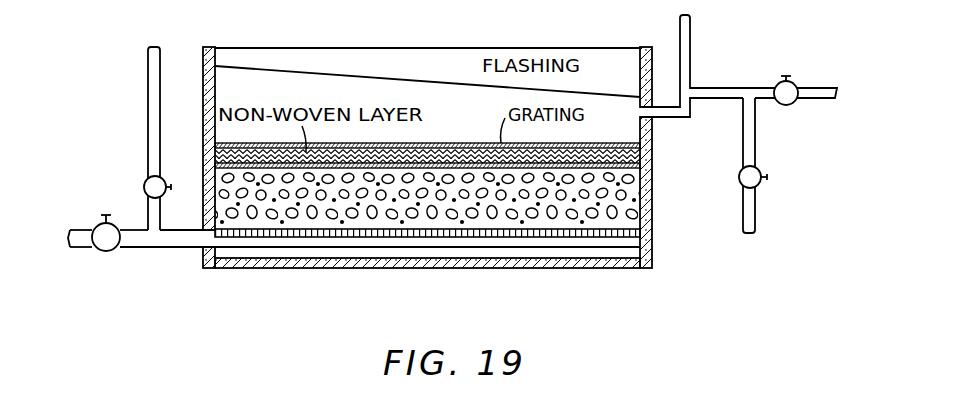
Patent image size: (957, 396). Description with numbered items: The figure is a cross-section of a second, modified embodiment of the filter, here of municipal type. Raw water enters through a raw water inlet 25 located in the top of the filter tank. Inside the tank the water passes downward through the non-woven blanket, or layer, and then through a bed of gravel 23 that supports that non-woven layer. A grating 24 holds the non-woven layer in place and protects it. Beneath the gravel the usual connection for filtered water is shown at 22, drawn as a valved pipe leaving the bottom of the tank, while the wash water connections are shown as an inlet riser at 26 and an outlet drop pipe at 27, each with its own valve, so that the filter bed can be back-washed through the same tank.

The filtered water connection 22 is at (81, 229).
The gravel 23 is at (628, 190).
The grating 24 is at (493, 143).
The raw water inlet 25 is at (679, 23).
The wash water inlet connection 26 is at (148, 83).
The wash water outlet connection 27 is at (757, 210).